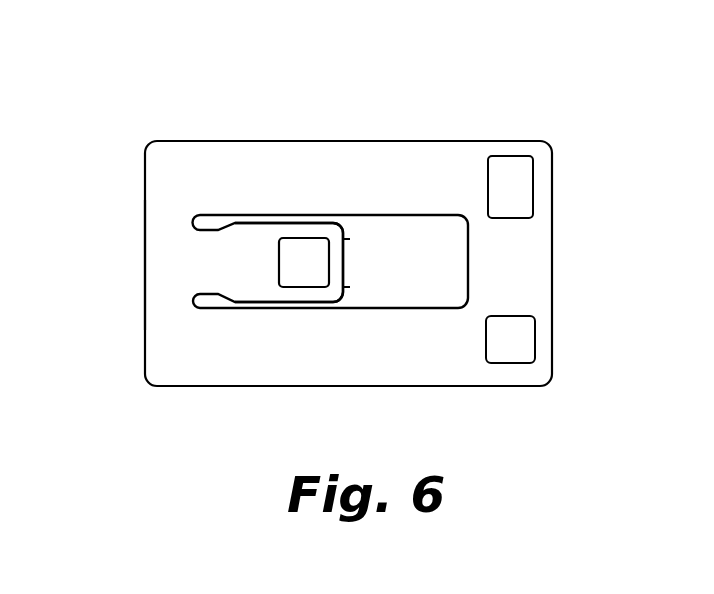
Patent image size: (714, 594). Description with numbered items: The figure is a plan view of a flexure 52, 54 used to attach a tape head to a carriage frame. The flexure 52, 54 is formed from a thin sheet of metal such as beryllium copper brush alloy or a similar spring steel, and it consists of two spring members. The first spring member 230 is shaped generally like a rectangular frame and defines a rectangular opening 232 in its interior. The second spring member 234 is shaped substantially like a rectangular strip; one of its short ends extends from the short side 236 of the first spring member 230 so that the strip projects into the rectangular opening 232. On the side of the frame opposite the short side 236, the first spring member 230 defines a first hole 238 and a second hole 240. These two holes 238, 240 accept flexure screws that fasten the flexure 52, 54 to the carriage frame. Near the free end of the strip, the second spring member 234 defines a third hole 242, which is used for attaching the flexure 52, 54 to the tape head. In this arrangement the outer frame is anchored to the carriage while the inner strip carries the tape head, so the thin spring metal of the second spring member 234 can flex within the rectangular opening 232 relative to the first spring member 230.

The flexure 52 is at (527, 90).
The flexure 54 is at (527, 90).
The first spring member 230 is at (352, 140).
The rectangular opening 232 is at (407, 242).
The second spring member 234 is at (263, 221).
The short side 236 is at (160, 270).
The first hole 238 is at (514, 177).
The second hole 240 is at (515, 340).
The third hole 242 is at (311, 275).